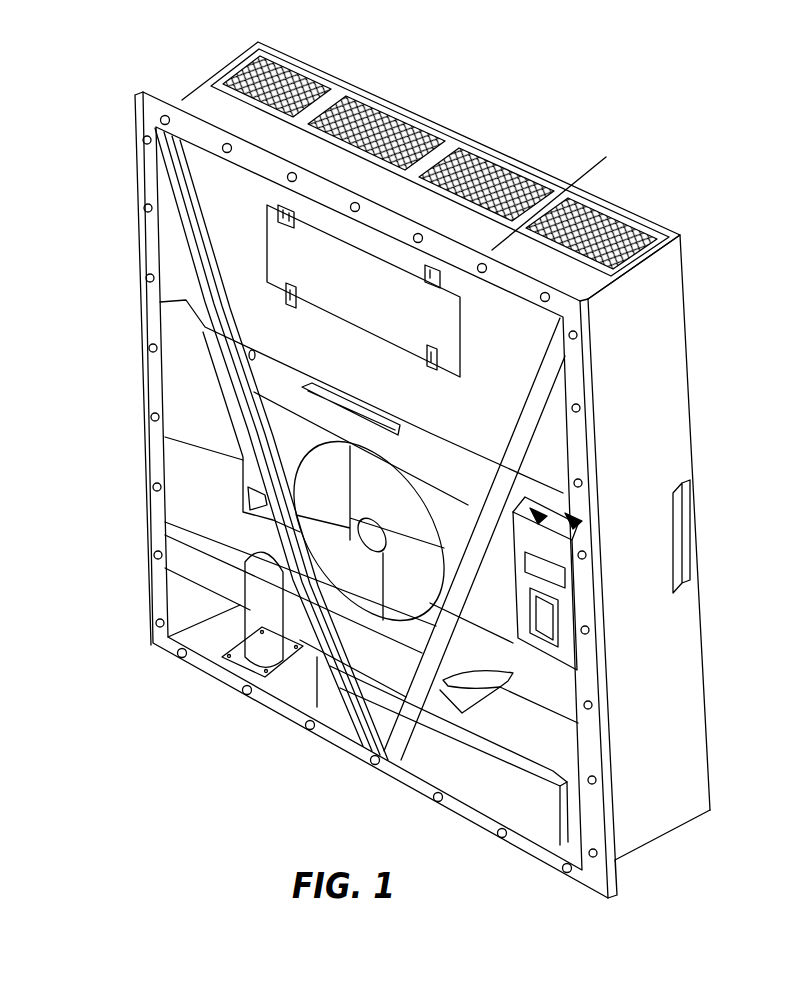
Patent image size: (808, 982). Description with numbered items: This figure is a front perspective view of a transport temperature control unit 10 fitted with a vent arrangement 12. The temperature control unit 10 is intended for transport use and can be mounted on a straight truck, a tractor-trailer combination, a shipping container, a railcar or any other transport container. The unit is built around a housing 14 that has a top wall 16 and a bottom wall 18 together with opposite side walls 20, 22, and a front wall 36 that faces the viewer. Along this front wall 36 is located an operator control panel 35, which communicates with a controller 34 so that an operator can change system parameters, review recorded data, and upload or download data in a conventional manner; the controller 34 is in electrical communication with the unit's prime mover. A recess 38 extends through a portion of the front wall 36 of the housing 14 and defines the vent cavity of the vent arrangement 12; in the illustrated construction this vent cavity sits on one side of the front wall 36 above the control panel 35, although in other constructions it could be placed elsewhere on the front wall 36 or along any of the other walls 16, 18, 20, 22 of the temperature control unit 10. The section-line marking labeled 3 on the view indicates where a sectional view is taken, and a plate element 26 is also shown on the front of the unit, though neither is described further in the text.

The temperature control unit 10 is at (631, 192).
The vent arrangement 12 is at (598, 537).
The housing 14 is at (673, 268).
The top wall 16 is at (398, 110).
The bottom wall 18 is at (698, 817).
The side wall 20 is at (182, 98).
The side wall 22 is at (678, 407).
The mounting plate 26 is at (267, 263).
The controller 34 is at (565, 527).
The operator control panel 35 is at (578, 678).
The front wall 36 is at (523, 352).
The recess 38 is at (515, 505).
The section line 3- 3 is at (492, 285).